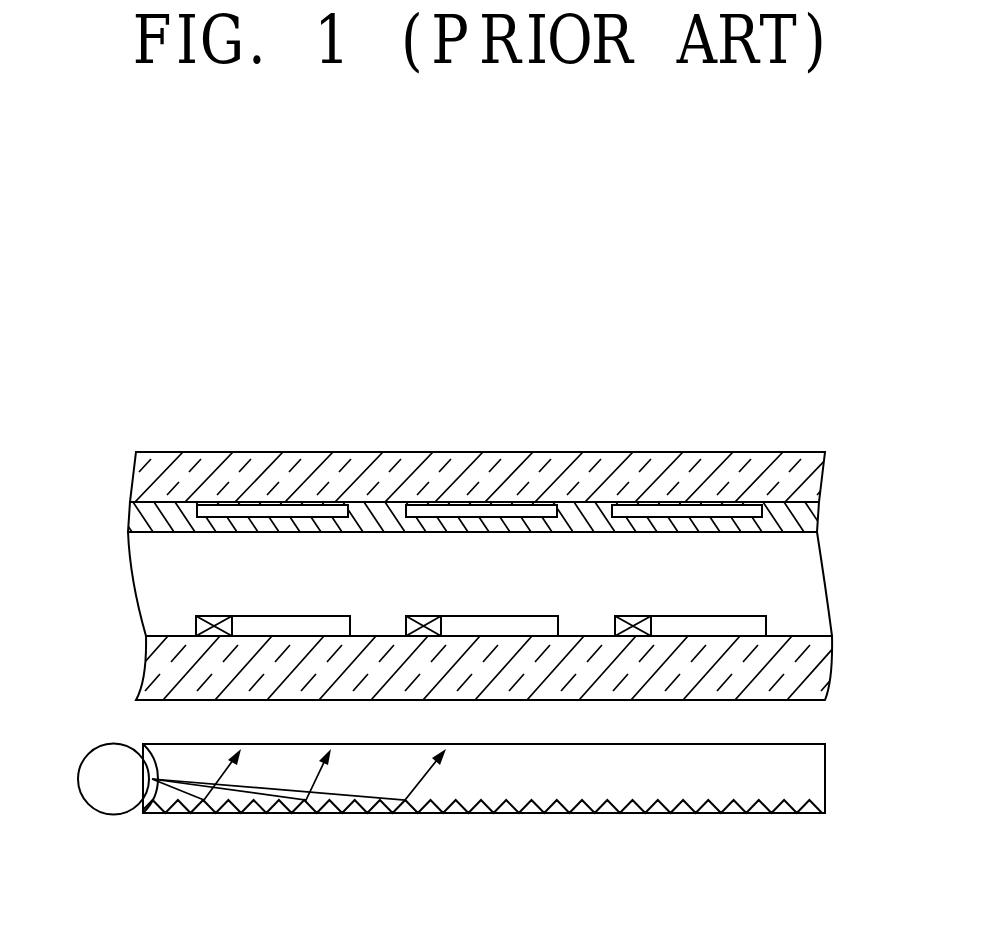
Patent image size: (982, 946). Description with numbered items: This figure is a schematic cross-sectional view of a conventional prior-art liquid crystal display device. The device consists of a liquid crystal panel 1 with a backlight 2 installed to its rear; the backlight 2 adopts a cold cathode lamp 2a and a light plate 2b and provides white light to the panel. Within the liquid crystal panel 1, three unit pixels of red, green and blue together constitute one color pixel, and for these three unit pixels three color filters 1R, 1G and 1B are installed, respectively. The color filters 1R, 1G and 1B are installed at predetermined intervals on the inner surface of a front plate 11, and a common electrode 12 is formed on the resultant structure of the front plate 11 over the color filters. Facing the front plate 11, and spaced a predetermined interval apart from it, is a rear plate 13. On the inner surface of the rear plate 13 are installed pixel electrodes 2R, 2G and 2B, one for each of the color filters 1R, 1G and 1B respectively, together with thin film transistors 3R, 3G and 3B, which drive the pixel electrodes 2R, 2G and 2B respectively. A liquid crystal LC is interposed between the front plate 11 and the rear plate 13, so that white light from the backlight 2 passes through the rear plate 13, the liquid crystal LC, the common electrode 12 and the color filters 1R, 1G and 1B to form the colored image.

The liquid crystal panel 1 is at (75, 545).
The front plate 11 is at (800, 482).
The common electrode 12 is at (800, 522).
The red color filter 1R is at (273, 513).
The green color filter 1G is at (485, 513).
The blue color filter 1B is at (693, 513).
The liquid crystal LC is at (790, 586).
The rear plate 13 is at (795, 680).
The thin film transistor for the red pixel 3R is at (218, 622).
The red pixel electrode 2R is at (291, 622).
The thin film transistor for the green pixel 3G is at (426, 622).
The green pixel electrode 2G is at (496, 622).
The thin film transistor for the blue pixel 3B is at (633, 622).
The blue pixel electrode 2B is at (704, 622).
The backlight 2 is at (75, 734).
The cold cathode lamp 2a is at (97, 777).
The light plate 2b is at (810, 770).